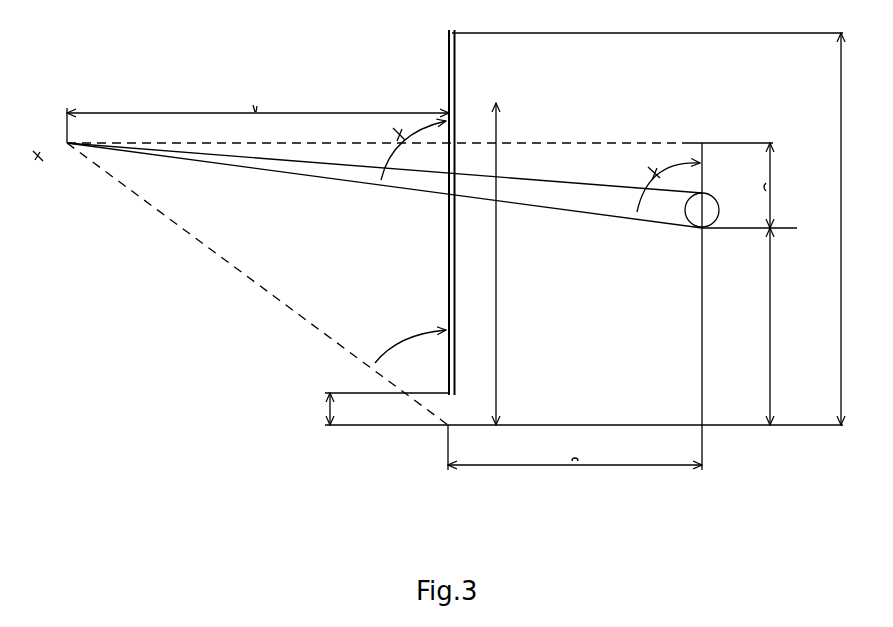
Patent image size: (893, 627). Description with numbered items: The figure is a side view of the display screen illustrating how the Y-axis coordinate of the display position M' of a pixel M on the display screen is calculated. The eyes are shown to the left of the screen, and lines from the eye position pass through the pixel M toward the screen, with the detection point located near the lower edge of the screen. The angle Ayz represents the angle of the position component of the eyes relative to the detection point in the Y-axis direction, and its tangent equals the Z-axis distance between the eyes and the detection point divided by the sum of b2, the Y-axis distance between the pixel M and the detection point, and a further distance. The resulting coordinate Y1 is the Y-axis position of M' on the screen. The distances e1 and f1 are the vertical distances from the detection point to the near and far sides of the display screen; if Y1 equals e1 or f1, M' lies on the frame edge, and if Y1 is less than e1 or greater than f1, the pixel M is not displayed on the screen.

The pixel M is at (684, 243).
The Y-axis coordinate of display position M' Y1 is at (482, 264).
The distance between pixel M and detection point in Y-axis direction b2 is at (757, 284).
The vertical distance to far side of display screen f1 is at (767, 229).
The vertical distance to near side of display screen e1 is at (310, 409).
The angle of position component of the eyes relative to the detection point in the Y Ayz is at (410, 337).